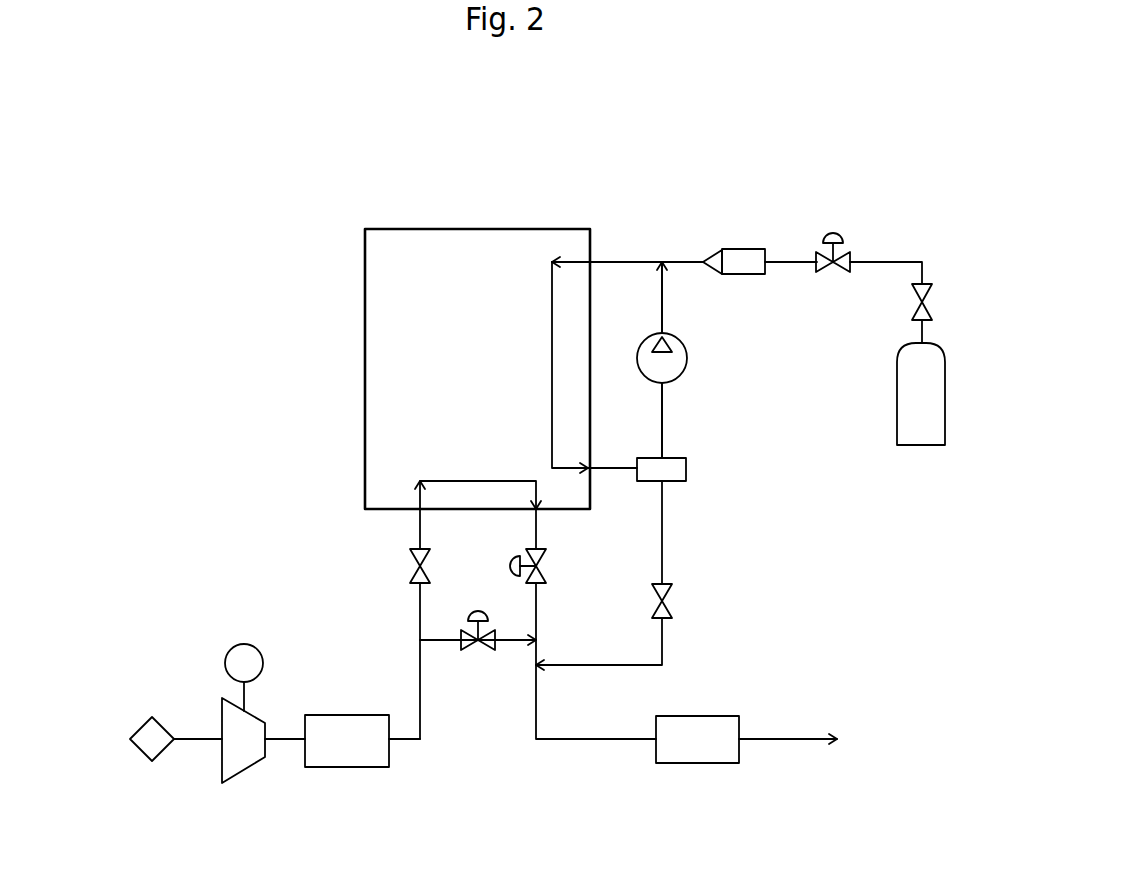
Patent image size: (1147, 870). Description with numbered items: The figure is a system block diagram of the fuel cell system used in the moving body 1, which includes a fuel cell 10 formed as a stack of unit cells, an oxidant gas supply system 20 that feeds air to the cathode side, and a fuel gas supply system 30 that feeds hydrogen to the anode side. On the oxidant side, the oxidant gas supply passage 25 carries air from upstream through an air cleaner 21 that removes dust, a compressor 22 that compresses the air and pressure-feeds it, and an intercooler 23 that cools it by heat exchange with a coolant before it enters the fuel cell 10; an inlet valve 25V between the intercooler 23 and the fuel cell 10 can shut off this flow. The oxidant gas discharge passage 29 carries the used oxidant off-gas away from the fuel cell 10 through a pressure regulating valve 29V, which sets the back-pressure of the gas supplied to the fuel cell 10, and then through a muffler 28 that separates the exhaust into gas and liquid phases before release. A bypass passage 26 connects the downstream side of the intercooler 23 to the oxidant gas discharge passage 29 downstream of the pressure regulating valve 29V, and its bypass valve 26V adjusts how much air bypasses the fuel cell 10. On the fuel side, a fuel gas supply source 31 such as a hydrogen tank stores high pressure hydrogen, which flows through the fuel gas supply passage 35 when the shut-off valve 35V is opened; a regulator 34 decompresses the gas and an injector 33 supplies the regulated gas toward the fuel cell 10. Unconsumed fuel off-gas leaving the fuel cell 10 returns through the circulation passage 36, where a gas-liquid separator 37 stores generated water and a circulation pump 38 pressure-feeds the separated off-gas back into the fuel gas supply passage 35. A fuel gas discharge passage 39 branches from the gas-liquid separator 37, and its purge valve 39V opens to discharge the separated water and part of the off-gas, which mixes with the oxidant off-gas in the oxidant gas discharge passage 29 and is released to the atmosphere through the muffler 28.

The moving body 1 is at (858, 180).
The fuel cell 10 is at (382, 229).
The oxidant gas supply system 20 is at (270, 630).
The air cleaner 21 is at (145, 725).
The compressor 22 is at (246, 762).
The intercooler 23 is at (351, 760).
The oxidant gas supply passage 25 is at (418, 661).
The inlet valve 25V is at (410, 568).
The bypass passage 26 is at (508, 642).
The bypass valve 26V is at (470, 652).
The muffler 28 is at (691, 765).
The oxidant gas discharge passage 29 is at (540, 703).
The pressure regulating valve 29V is at (548, 567).
The fuel gas supply system 30 is at (800, 475).
The fuel gas supply source 31 is at (897, 416).
The injector 33 is at (746, 249).
The regulator 34 is at (831, 275).
The fuel gas supply passage 35 is at (672, 262).
The shut-off valve 35V is at (912, 311).
The circulation passage 36 is at (664, 418).
The gas-liquid separator 37 is at (688, 470).
The circulation pump 38 is at (688, 358).
The fuel gas discharge passage 39 is at (664, 655).
The purge valve 39V is at (672, 601).